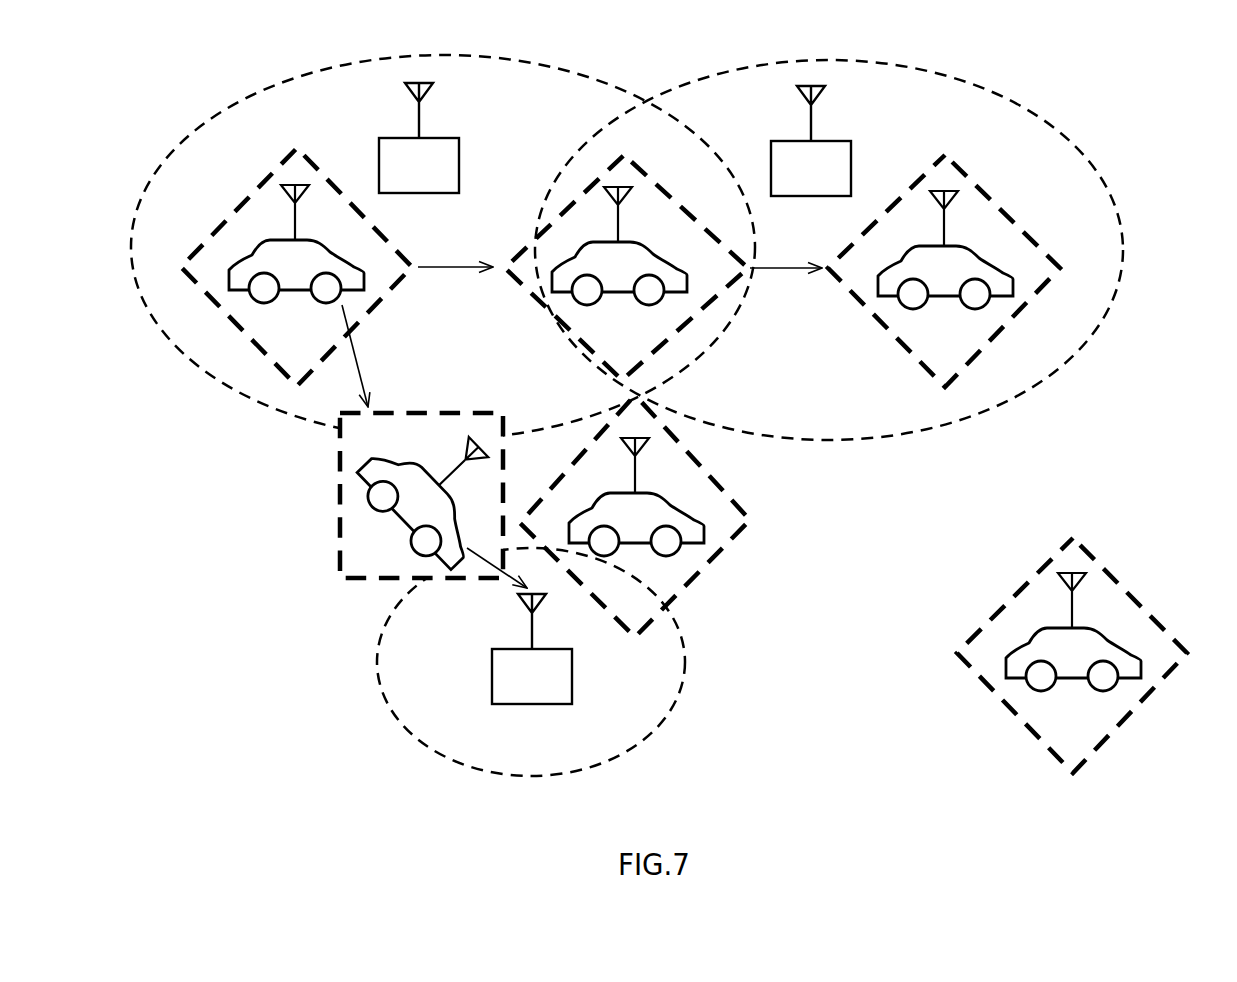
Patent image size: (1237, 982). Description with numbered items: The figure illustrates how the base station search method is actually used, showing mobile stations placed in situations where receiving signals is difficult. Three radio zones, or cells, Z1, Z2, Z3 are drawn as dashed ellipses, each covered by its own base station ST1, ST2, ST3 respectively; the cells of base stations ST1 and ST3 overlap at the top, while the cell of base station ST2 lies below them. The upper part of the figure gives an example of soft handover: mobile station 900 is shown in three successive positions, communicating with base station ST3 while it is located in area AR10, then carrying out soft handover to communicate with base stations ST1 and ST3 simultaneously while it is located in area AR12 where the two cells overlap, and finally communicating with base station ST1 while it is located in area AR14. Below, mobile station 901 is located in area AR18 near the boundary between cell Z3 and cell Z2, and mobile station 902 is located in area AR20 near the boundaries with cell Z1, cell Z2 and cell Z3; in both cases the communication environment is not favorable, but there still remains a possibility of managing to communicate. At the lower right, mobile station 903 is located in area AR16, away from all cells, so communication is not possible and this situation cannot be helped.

The radio zone Z1 is at (983, 90).
The radio zone Z2 is at (380, 652).
The radio zone Z3 is at (575, 77).
The base station ST1 is at (852, 156).
The base station ST2 is at (572, 668).
The base station ST3 is at (494, 138).
The area AR10 is at (392, 245).
The area AR12 is at (536, 298).
The area AR14 is at (1033, 193).
The area AR16 is at (1140, 553).
The area AR18 is at (470, 387).
The area AR20 is at (732, 504).
The mobile station 900 is at (293, 291).
The mobile station 901 is at (396, 526).
The mobile station 902 is at (705, 533).
The mobile station 903 is at (1076, 680).